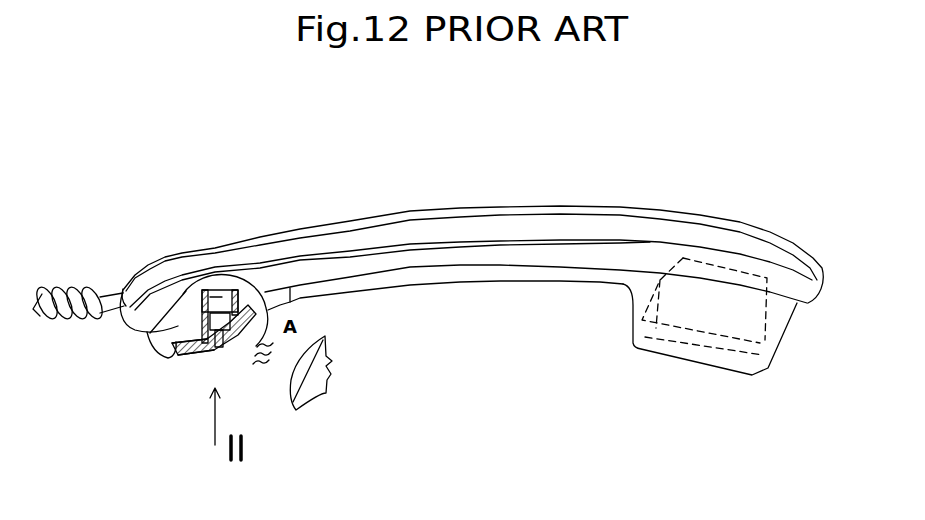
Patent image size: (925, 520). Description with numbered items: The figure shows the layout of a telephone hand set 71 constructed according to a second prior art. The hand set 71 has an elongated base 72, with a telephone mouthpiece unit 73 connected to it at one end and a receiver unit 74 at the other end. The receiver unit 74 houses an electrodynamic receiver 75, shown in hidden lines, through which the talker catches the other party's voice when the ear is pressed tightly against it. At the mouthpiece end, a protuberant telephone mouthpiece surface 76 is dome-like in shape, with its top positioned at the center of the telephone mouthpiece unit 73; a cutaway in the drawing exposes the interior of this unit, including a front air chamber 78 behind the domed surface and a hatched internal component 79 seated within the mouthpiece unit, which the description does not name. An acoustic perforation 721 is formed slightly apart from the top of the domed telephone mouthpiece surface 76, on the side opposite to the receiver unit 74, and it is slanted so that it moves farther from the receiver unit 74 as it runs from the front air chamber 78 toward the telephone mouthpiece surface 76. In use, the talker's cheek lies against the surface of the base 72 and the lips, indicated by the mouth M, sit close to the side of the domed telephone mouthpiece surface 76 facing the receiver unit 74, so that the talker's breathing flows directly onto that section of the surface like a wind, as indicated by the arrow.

The hand set 71 is at (490, 213).
The base 72 is at (504, 272).
The acoustic perforation 721 is at (226, 348).
The telephone mouthpiece unit 73 is at (167, 360).
The receiver unit 74 is at (689, 361).
The electrodynamic receiver 75 is at (745, 327).
The telephone mouthpiece surface 76 is at (180, 358).
The front air chamber 78 is at (210, 352).
The microphone 79 is at (187, 285).
The mouth M is at (331, 358).